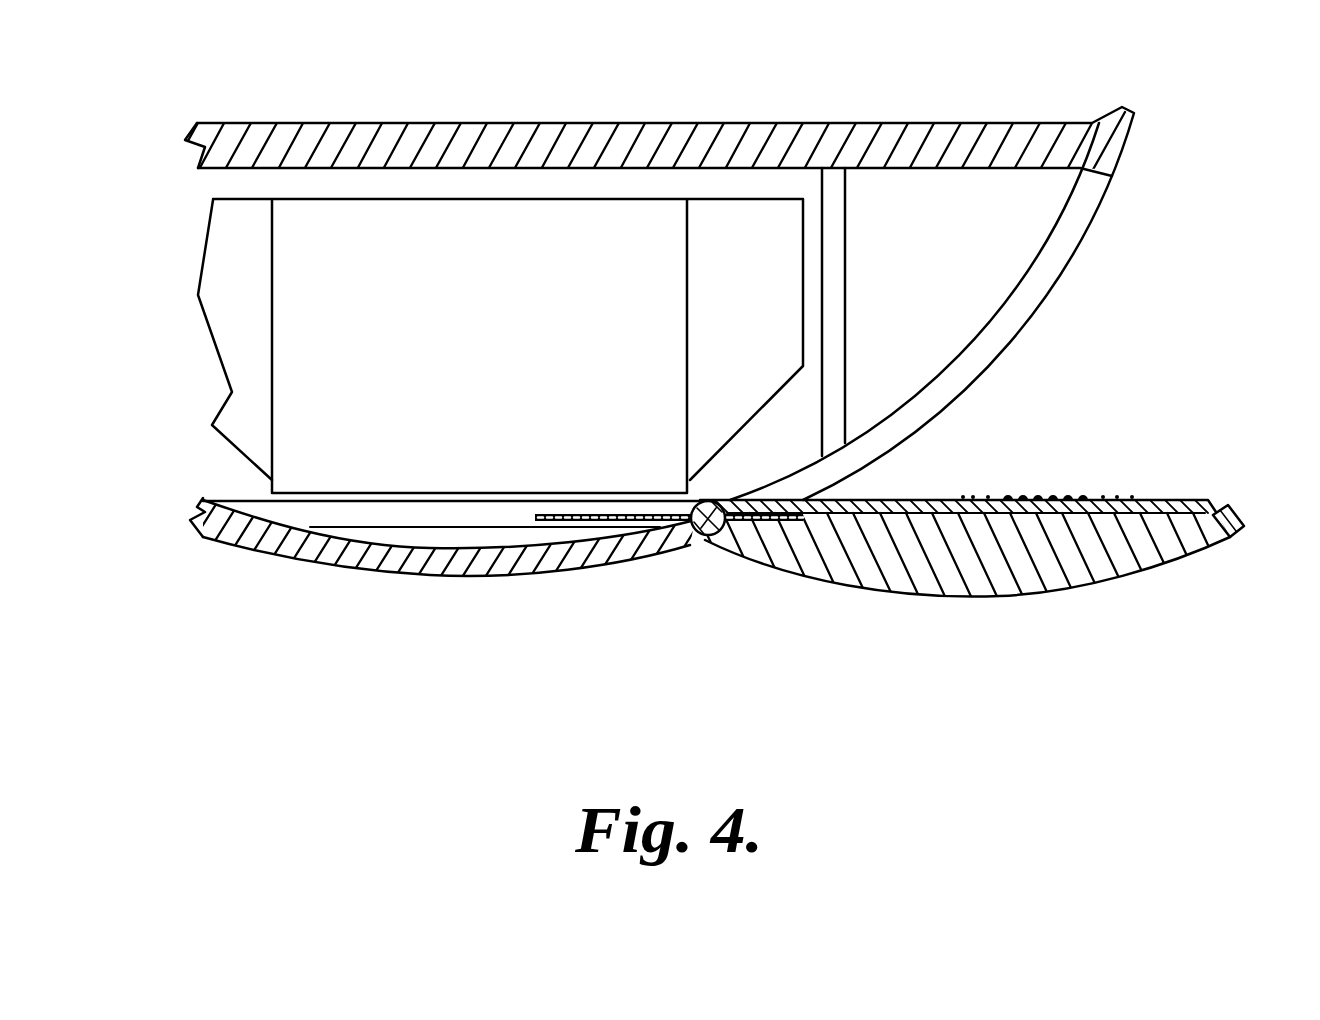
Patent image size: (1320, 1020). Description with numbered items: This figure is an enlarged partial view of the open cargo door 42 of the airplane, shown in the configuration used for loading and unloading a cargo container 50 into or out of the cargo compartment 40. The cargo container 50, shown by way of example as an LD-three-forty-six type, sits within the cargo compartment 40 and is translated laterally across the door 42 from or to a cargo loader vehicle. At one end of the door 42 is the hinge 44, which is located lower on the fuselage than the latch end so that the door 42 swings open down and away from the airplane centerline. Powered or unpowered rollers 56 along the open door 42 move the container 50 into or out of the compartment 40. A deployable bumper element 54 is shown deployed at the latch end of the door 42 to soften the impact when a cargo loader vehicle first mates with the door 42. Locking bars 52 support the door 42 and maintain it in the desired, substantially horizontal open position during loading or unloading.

The cargo compartment 40 is at (247, 483).
The cargo door 42 is at (1143, 571).
The hinge 44 is at (693, 530).
The cargo container 50 is at (242, 230).
The locking bars 52 is at (790, 527).
The deployable bumper element 54 is at (1240, 518).
The rollers 56 is at (1066, 488).